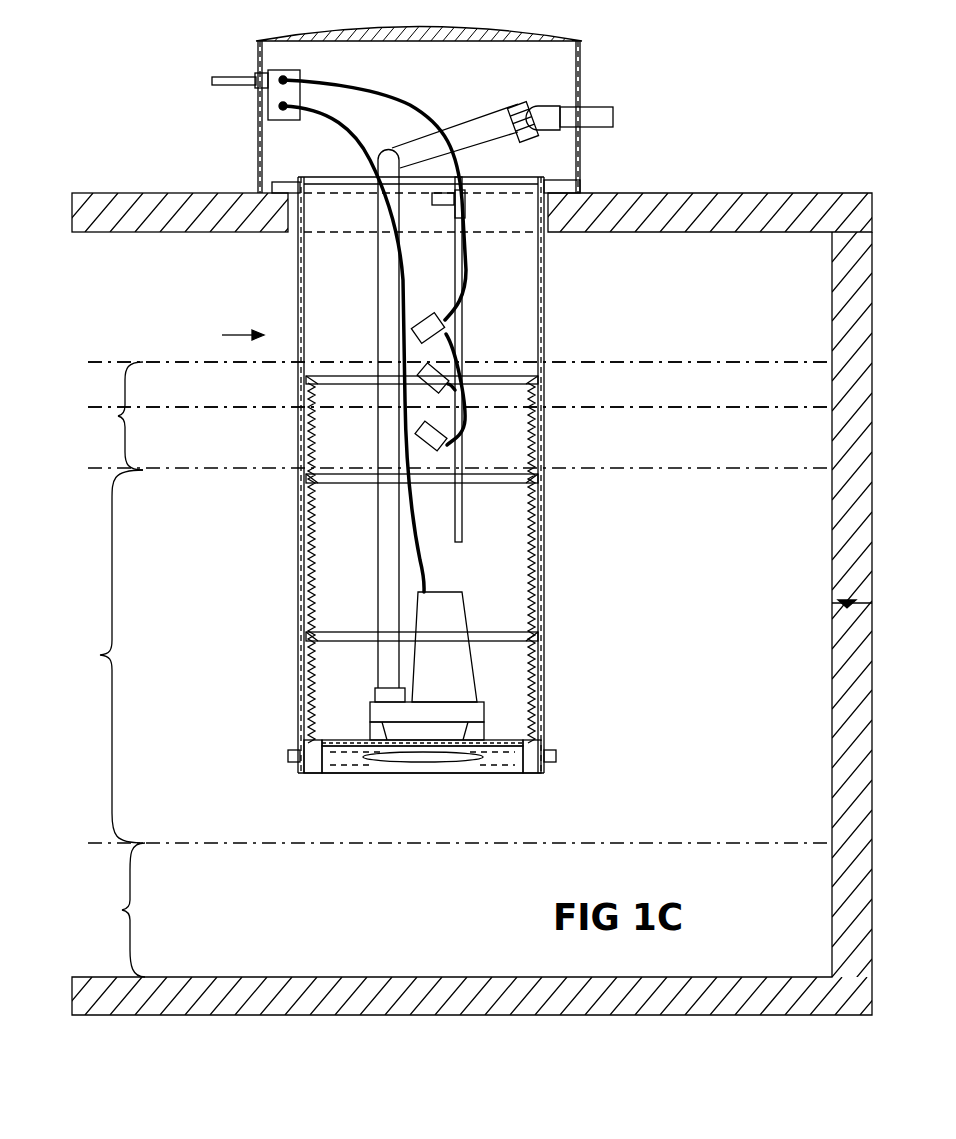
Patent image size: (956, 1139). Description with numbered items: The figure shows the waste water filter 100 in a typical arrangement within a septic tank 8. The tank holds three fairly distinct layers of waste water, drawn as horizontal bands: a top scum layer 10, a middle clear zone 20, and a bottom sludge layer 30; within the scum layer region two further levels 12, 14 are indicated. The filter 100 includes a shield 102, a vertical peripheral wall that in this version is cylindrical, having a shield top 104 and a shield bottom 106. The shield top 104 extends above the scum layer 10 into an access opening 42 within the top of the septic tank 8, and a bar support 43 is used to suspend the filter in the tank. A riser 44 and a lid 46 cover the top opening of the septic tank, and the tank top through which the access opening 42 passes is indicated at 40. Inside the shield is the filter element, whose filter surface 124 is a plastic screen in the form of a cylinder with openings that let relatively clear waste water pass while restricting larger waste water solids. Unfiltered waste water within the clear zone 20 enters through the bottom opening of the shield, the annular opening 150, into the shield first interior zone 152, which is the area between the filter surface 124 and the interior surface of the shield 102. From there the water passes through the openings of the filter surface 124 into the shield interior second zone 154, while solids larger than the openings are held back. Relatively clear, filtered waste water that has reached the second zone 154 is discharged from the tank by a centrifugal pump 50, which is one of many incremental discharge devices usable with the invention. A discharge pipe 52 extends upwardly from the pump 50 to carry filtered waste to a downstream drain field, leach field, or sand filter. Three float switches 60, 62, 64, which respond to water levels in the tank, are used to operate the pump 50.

The septic tank 8 is at (845, 468).
The top scum layer 10 is at (458, 416).
The first level 12 is at (218, 368).
The second level 14 is at (223, 413).
The middle clear zone 20 is at (450, 656).
The bottom sludge layer 30 is at (118, 910).
The floor slab 40 is at (760, 203).
The access opening 42 is at (547, 227).
The bar support 43 is at (560, 188).
The riser 44 is at (580, 87).
The lid 46 is at (417, 41).
The centrifugal pump 50 is at (452, 683).
The discharge pipe 52 is at (390, 585).
The float switch 60 is at (445, 375).
The float switch 62 is at (423, 323).
The float switch 64 is at (434, 445).
The waste water filter 100 is at (220, 336).
The shield 102 is at (546, 523).
The shield top 104 is at (541, 313).
The shield bottom 106 is at (541, 733).
The filter surface 124 is at (541, 563).
The annular opening 150 is at (533, 772).
The shield first interior zone 152 is at (313, 497).
The shield interior second zone 154 is at (333, 540).